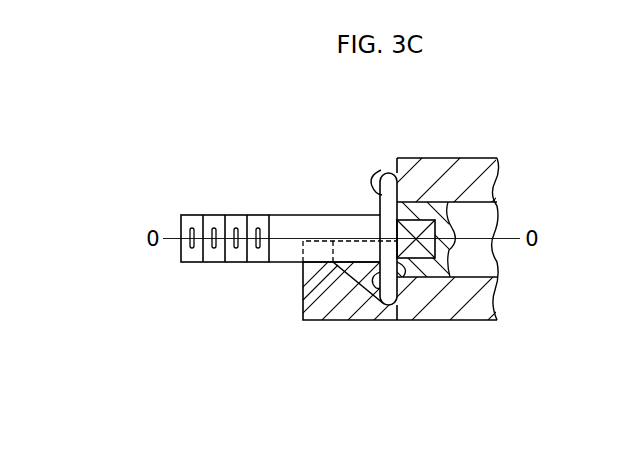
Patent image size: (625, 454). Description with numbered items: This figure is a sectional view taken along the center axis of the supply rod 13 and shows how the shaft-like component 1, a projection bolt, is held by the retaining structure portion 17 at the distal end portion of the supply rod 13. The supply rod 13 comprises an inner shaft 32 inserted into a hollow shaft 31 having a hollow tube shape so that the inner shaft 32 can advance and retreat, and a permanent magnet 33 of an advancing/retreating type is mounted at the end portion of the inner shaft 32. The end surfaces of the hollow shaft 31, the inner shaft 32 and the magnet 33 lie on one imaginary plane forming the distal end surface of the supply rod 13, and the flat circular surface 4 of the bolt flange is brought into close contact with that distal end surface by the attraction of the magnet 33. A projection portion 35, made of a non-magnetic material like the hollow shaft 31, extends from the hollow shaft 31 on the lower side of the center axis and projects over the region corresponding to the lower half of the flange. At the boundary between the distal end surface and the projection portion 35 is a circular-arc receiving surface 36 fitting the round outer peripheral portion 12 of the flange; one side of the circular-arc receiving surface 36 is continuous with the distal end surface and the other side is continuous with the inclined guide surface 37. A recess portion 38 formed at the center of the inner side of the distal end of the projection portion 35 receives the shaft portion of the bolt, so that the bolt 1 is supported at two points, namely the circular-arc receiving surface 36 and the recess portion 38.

The shaft-like component 1 is at (228, 203).
The retaining structure portion 17 is at (352, 199).
The recess portion 38 is at (317, 240).
The projection portion 35 is at (303, 290).
The circular-arc receiving surface 36 is at (376, 276).
The inclined guide surface 37 is at (337, 290).
The outer peripheral portion 12 is at (387, 202).
The hollow shaft 31 is at (465, 170).
The magnet 33 is at (418, 205).
The surface 4 is at (412, 259).
The inner shaft 32 is at (487, 263).
The supply rod 13 is at (462, 324).